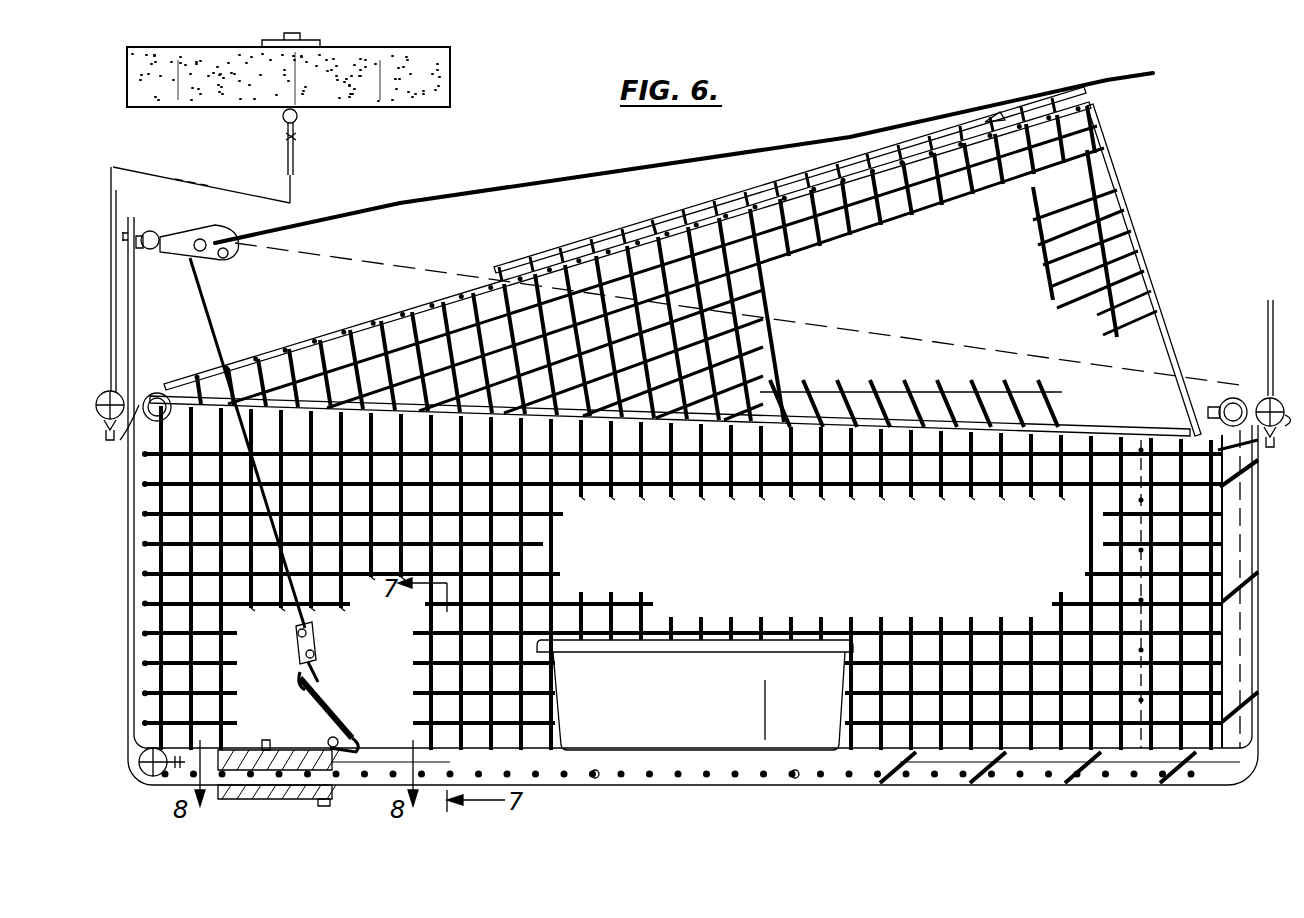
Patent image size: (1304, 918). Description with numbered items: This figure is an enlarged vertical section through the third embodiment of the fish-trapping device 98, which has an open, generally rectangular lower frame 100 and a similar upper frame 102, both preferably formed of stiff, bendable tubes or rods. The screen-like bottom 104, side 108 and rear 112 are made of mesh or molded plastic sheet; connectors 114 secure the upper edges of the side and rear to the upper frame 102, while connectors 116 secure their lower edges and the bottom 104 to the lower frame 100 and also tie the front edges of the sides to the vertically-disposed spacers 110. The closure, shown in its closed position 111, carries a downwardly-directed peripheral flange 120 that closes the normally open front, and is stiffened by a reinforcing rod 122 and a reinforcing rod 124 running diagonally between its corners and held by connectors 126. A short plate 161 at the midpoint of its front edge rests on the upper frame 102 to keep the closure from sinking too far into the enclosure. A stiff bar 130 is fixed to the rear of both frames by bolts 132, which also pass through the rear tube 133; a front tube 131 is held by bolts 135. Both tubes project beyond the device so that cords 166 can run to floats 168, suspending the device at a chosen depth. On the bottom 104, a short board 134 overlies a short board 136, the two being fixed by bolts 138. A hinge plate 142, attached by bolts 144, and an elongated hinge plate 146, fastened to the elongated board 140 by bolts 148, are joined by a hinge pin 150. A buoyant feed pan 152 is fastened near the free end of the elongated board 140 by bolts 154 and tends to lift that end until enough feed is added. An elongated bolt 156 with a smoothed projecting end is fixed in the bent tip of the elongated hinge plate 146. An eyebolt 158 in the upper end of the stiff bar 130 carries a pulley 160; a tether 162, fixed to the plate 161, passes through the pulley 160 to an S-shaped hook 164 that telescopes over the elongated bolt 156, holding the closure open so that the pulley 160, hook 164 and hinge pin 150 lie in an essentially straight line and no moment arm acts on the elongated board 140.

The fish-trapping device 98 is at (562, 160).
The lower frame 100 is at (150, 784).
The upper frame 102 is at (185, 392).
The bottom 104 is at (1012, 786).
The side 108 is at (930, 490).
The vertically-disposed spacer 110 is at (1252, 532).
The closed position 111 is at (1140, 531).
The rear 112 is at (128, 632).
The connectors 114 is at (995, 385).
The connectors 116 is at (1258, 580).
The downwardly-directed peripheral flange 120 is at (1080, 180).
The reinforcing rod 122 is at (548, 270).
The reinforcing rod 124 is at (808, 172).
The connectors 126 is at (885, 155).
The stiff bar 130 is at (128, 525).
The tube 131 is at (1275, 440).
The bolts 132 is at (143, 428).
The tube 133 is at (118, 392).
The short board 134 is at (232, 748).
The bolts 135 is at (1288, 398).
The short board 136 is at (325, 788).
The bolts 138 is at (265, 740).
The elongated board 140 is at (580, 780).
The hinge plate 142 is at (328, 738).
The bolts 144 is at (300, 802).
The elongated hinge plate 146 is at (345, 722).
The bolts 148 is at (362, 740).
The hinge pin 150 is at (350, 710).
The feed pan 152 is at (706, 714).
The bolts 154 is at (606, 780).
The elongated bolt 156 is at (332, 678).
The eyebolt 158 is at (152, 250).
The pulley 160 is at (216, 260).
The short plate 161 is at (1115, 85).
The tether 162 is at (465, 190).
The S-shaped hook 164 is at (300, 662).
The cords 166 is at (296, 160).
The floats 168 is at (407, 99).